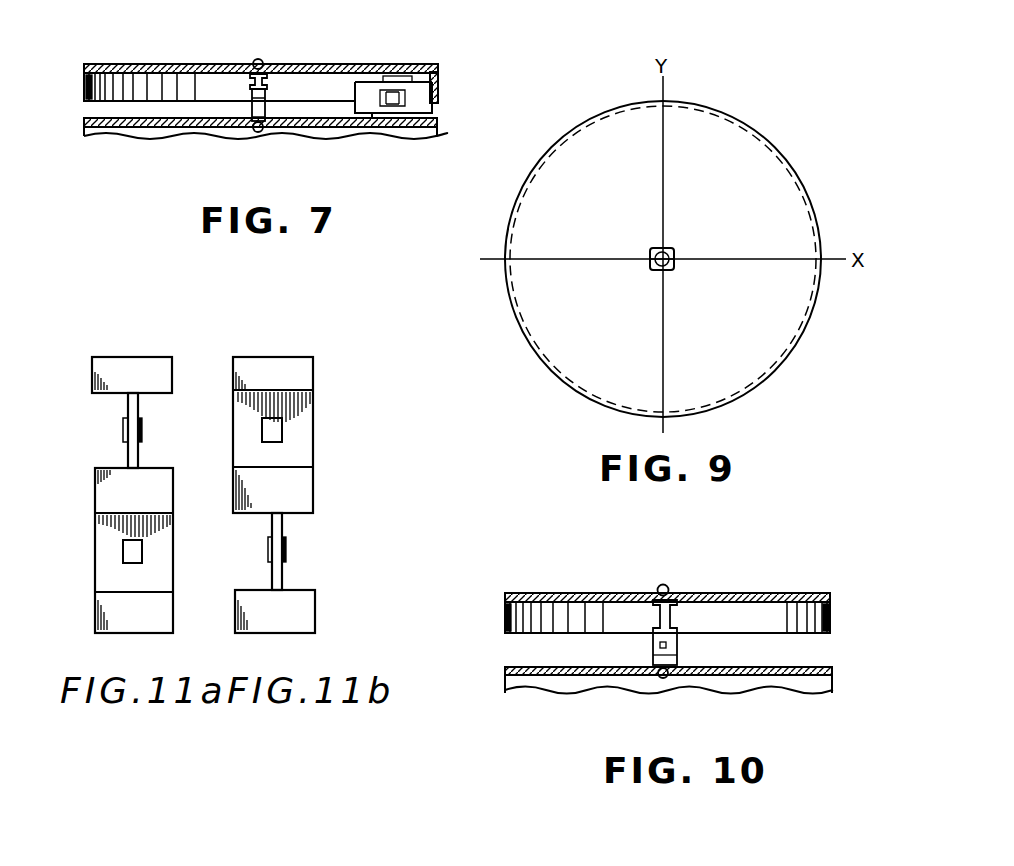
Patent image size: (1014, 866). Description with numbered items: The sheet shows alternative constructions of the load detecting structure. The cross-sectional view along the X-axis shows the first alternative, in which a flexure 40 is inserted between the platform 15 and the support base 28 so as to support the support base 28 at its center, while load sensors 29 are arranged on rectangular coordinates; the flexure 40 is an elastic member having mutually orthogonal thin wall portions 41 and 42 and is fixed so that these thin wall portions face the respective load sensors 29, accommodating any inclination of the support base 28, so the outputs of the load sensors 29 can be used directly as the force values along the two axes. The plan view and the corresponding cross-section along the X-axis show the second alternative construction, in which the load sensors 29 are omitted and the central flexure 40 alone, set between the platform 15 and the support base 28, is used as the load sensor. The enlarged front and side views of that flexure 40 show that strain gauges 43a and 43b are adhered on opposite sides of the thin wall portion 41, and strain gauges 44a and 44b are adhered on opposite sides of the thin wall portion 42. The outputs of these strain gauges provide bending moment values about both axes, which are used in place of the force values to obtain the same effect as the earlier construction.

In FIG. 7, the support base 28 is at (390, 66).
In FIG. 9, the support base 28 is at (782, 153).
In FIG. 10, the support base 28 is at (763, 594).
In FIG. 7, the load sensor 29 is at (440, 88).
In FIG. 7, the flexure 40 is at (252, 105).
In FIG. 9, the flexure 40 is at (676, 253).
In FIG. 10, the flexure 40 is at (677, 645).
In FIG. 7, the platform 15 is at (367, 129).
In FIG. 10, the platform 15 is at (833, 672).
In FIG. 11B, the thin wall portion 41 is at (303, 412).
In FIG. 11B, the thin wall portion 42 is at (283, 528).
In FIG. 11A, the strain gauge 43a is at (141, 430).
In FIG. 11B, the strain gauge 43a is at (276, 430).
In FIG. 11A, the strain gauge 43b is at (123, 432).
In FIG. 11A, the strain gauge 44a is at (123, 553).
In FIG. 11B, the strain gauge 44a is at (268, 550).
In FIG. 11B, the strain gauge 44b is at (286, 557).